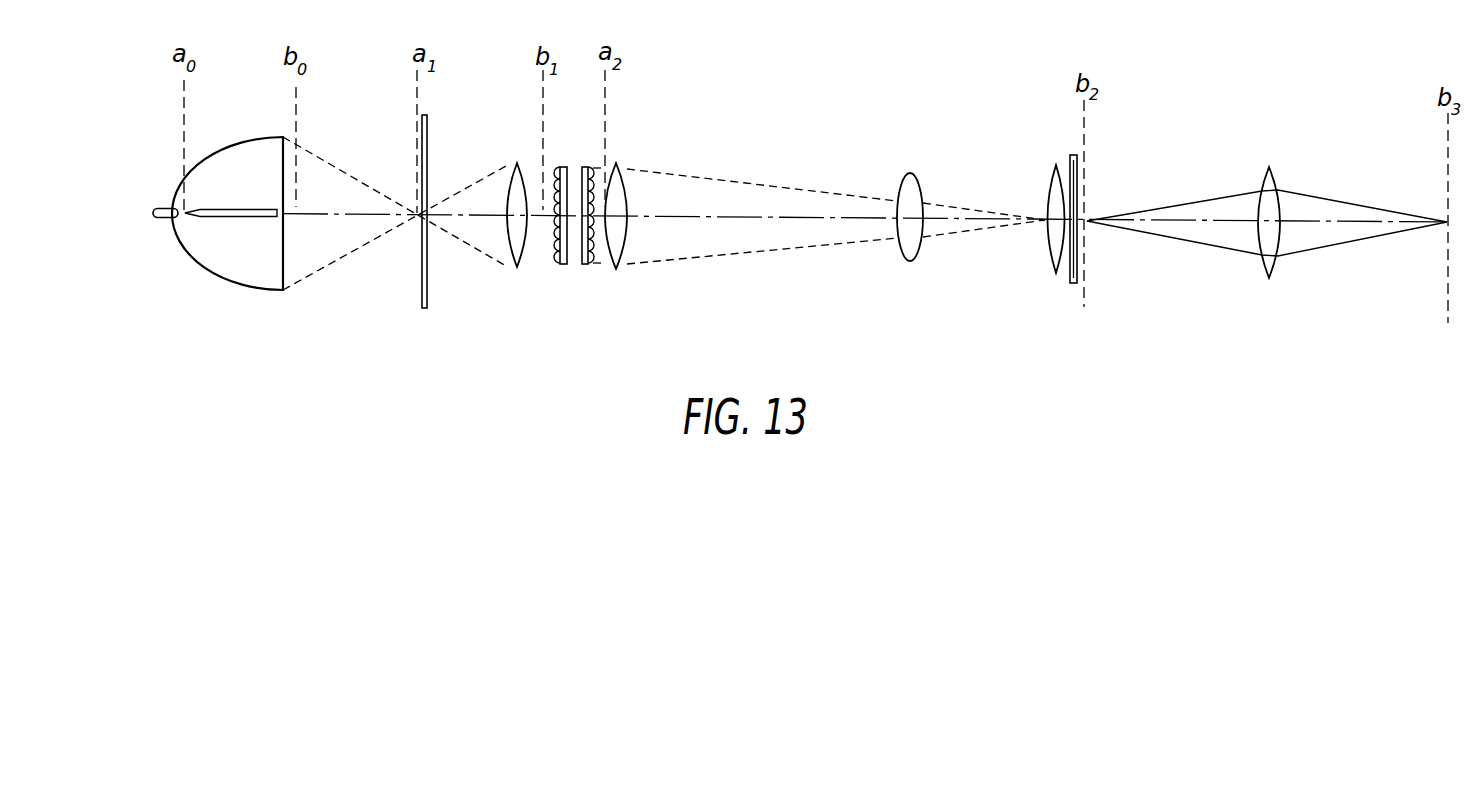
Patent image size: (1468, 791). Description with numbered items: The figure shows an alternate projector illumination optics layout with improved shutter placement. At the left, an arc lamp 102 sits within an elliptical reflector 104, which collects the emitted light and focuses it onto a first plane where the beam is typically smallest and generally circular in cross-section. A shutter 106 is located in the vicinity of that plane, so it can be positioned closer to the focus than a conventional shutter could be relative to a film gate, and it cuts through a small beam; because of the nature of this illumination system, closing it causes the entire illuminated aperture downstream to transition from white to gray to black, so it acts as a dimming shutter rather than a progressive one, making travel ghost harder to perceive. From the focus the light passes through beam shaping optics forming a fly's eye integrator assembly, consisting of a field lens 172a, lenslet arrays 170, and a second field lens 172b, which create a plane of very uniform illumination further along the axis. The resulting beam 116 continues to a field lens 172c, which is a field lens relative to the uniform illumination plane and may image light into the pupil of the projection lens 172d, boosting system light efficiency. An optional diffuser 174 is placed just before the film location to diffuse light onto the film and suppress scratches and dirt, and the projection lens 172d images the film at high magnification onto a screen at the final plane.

The arc lamp 102 is at (162, 220).
The elliptical reflector 104 is at (247, 288).
The shutter 106 is at (416, 293).
The field lens 172a is at (515, 268).
The lenslet arrays 170 is at (586, 266).
The field lens 172b is at (617, 270).
The beam 116 is at (902, 258).
The field lens 172c is at (1049, 258).
The diffuser 174 is at (1073, 284).
The projection lens 172d is at (1270, 277).